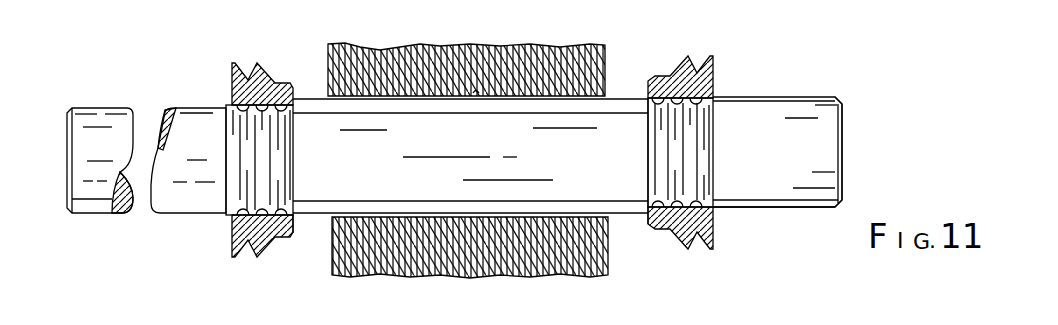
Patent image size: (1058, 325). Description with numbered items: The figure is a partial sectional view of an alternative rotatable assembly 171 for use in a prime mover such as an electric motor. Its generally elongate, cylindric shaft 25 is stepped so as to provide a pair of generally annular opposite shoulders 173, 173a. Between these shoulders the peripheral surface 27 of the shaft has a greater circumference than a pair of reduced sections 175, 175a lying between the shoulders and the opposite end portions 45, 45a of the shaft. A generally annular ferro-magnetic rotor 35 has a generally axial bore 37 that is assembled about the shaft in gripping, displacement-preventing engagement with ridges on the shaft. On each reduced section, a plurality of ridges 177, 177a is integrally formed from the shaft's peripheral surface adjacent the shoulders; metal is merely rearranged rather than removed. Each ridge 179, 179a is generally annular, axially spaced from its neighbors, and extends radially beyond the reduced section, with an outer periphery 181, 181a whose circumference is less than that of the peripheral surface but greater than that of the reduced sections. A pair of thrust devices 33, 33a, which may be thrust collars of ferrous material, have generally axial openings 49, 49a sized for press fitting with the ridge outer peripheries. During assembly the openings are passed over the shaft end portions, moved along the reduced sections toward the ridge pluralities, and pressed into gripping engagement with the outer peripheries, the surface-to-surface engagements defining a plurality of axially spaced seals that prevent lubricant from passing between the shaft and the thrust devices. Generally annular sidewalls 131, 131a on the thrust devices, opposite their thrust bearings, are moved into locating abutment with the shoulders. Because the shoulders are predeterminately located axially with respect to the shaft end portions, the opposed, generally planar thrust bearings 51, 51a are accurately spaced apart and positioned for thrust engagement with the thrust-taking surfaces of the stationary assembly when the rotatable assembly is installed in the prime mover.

The shaft 25 is at (826, 145).
The peripheral surface 27 is at (622, 216).
The thrust device 33 is at (257, 62).
The thrust device 33a is at (710, 55).
The ferro-magnetic rotor 35 is at (450, 48).
The axial bore 37 is at (477, 93).
The end portion 45 is at (96, 112).
The end portion 45a is at (835, 97).
The opening 49 is at (250, 100).
The opening 49a is at (712, 84).
The thrust bearing 51 is at (234, 252).
The thrust bearing 51a is at (716, 243).
The sidewall 131 is at (297, 228).
The sidewall 131a is at (649, 218).
The rotatable assembly 171 is at (805, 45).
The shoulder 173 is at (297, 112).
The shoulder 173a is at (647, 108).
The reduced section 175 is at (172, 214).
The reduced section 175a is at (813, 201).
The plurality of ridges 177 is at (226, 205).
The plurality of ridges 177a is at (782, 193).
The ridge 179 is at (273, 107).
The ridge 179a is at (675, 104).
The outer periphery 181 is at (240, 237).
The outer periphery 181a is at (695, 212).